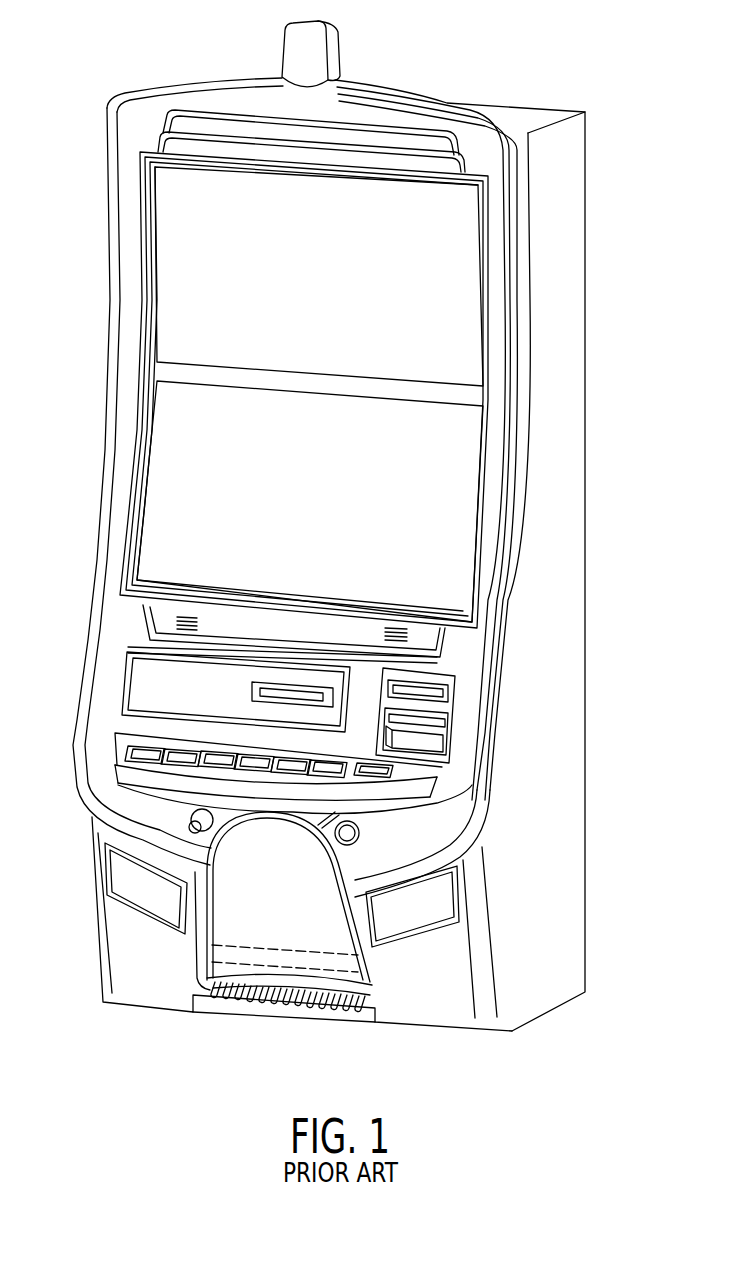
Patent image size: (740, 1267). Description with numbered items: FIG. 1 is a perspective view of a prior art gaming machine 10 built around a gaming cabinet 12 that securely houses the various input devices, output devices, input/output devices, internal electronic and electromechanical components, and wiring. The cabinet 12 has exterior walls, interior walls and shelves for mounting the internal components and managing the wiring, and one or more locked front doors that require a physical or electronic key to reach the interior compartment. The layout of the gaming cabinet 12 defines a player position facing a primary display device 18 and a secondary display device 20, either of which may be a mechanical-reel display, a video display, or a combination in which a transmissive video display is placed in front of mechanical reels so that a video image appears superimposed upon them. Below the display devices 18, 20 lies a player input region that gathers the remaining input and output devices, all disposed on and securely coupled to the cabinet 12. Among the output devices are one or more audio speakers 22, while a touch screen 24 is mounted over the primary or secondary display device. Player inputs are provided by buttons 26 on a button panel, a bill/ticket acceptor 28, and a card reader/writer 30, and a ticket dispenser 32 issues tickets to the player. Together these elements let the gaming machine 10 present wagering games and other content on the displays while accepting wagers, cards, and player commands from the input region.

The gaming machine 10 is at (620, 52).
The gaming cabinet 12 is at (567, 308).
The primary display device 18 is at (437, 492).
The secondary display device 20 is at (198, 250).
The audio speakers 22 is at (177, 626).
The touch screen 24 is at (453, 552).
The buttons 26 is at (182, 757).
The bill/ticket acceptor 28 is at (433, 740).
The card reader/writer 30 is at (250, 693).
The ticket dispenser 32 is at (443, 680).